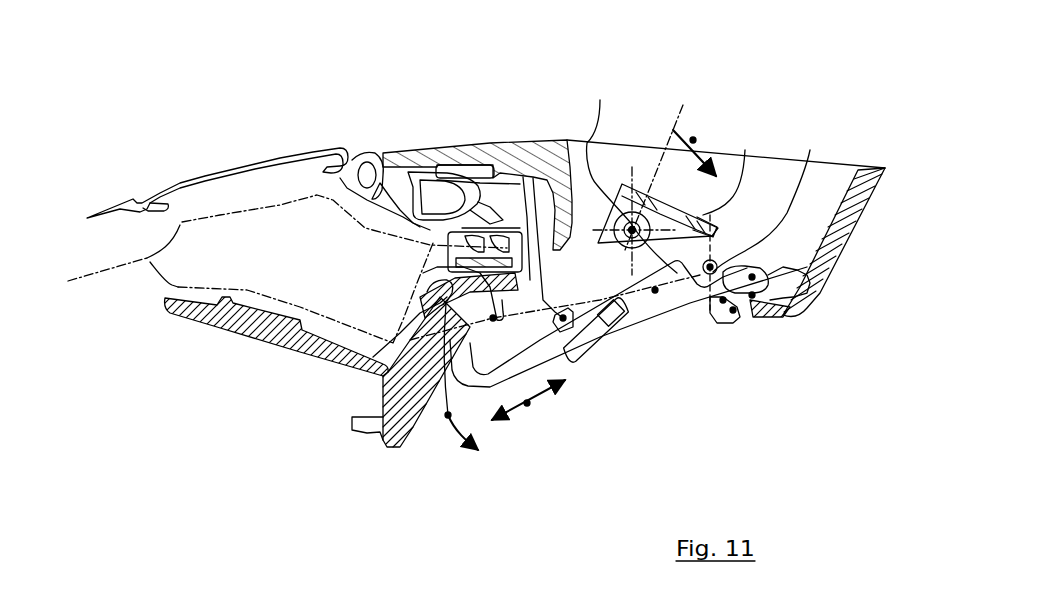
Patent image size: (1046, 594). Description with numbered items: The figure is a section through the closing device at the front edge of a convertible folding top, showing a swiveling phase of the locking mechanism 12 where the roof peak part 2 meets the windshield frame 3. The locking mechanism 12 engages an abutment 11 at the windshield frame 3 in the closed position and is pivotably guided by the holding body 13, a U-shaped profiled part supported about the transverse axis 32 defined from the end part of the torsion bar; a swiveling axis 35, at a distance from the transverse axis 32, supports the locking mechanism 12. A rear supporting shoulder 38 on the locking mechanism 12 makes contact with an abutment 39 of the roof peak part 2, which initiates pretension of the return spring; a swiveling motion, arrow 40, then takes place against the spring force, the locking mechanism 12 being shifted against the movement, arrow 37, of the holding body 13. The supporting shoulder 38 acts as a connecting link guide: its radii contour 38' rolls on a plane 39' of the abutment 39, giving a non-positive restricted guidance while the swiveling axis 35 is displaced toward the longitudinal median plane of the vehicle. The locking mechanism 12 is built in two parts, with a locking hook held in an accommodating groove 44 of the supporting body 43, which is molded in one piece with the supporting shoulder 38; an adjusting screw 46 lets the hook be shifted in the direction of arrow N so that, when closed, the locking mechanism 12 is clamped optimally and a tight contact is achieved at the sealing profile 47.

The roof peak part 2 is at (466, 140).
The windshield frame 3 is at (305, 392).
The abutment 11 is at (412, 303).
The locking mechanism 12 is at (606, 362).
The holding body 13 is at (745, 150).
The transverse axis 32 is at (600, 100).
The swiveling axis 35 is at (810, 150).
The movement of the holding body 37 is at (693, 140).
The supporting shoulder 38 is at (801, 284).
The radii contour 38' is at (804, 319).
The abutment 39 is at (752, 336).
The plane 39' is at (745, 359).
The swiveling motion 40 is at (448, 415).
The supporting body 43 is at (655, 290).
The accommodating groove 44 is at (620, 313).
The adjusting screw 46 is at (593, 380).
The sealing profile 47 is at (368, 146).
The direction of adjustment N is at (527, 403).